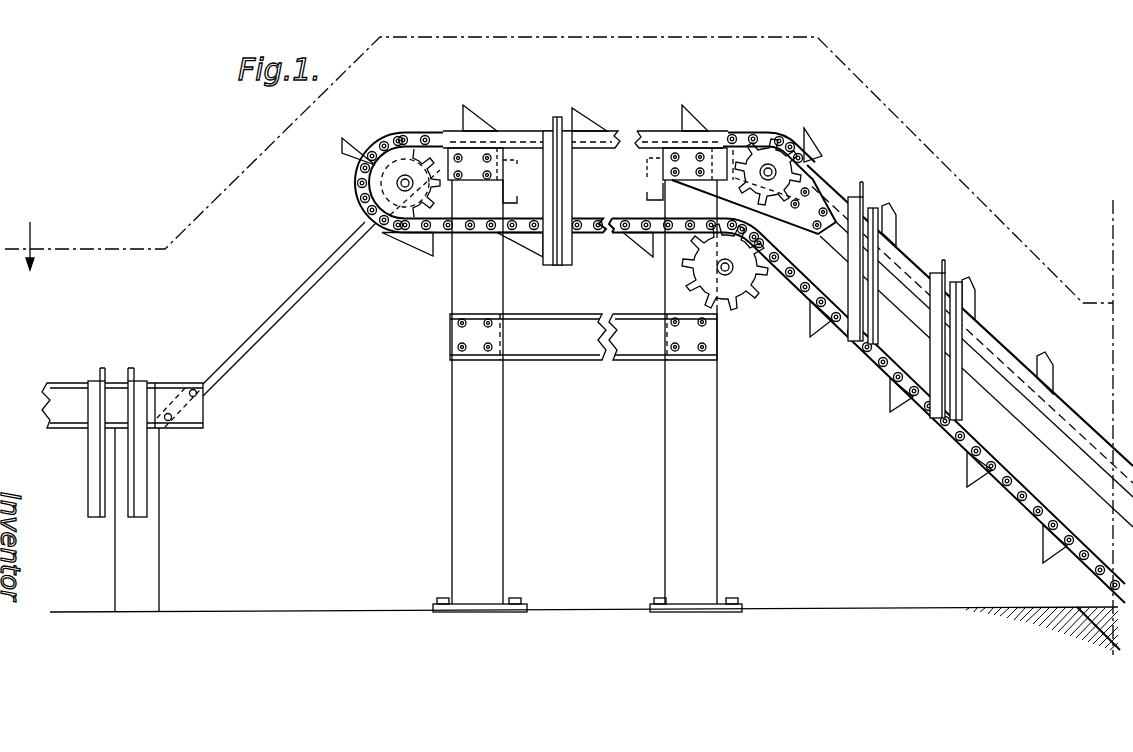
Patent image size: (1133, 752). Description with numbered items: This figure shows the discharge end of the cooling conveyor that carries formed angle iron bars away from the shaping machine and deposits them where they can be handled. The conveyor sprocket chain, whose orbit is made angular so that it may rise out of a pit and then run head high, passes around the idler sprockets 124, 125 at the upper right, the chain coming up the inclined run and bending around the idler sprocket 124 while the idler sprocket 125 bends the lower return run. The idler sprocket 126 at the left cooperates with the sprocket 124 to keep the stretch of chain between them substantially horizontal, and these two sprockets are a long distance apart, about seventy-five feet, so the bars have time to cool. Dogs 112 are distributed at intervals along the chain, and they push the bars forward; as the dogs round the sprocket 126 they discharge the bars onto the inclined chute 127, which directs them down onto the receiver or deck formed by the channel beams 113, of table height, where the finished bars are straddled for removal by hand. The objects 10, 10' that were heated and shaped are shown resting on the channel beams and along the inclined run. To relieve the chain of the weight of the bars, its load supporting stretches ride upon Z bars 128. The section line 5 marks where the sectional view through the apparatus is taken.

The section line 5 is at (20, 239).
The object to be heated 10 is at (511, 306).
The object to be heated 10' is at (545, 299).
The dog 112 is at (466, 120).
The channel beam 113 is at (163, 397).
The idler sprocket 124 is at (775, 140).
The idler sprocket 125 is at (745, 302).
The idler sprocket 126 is at (402, 157).
The chute 127 is at (323, 273).
The Z bar 128 is at (897, 290).